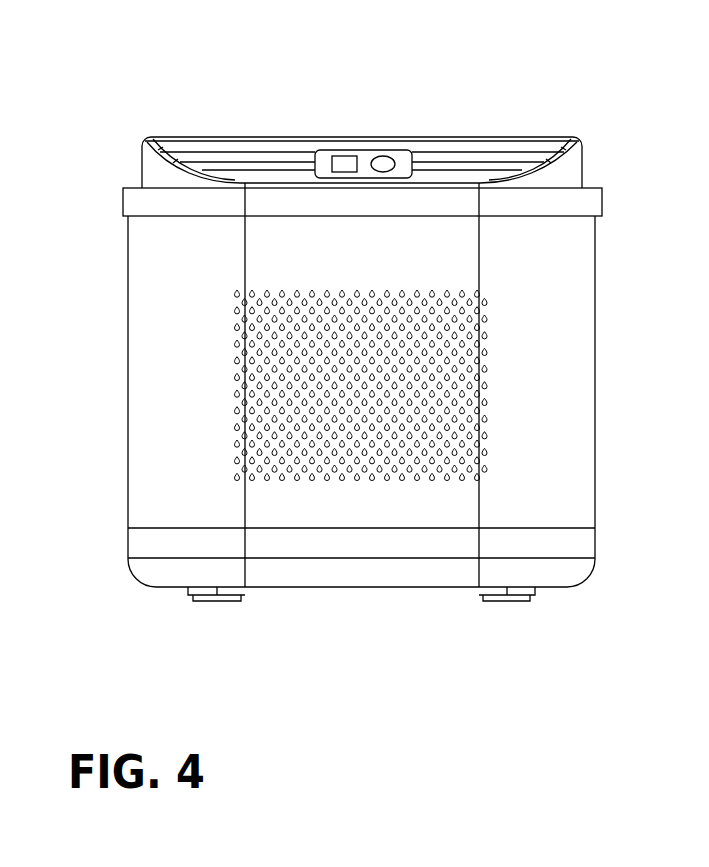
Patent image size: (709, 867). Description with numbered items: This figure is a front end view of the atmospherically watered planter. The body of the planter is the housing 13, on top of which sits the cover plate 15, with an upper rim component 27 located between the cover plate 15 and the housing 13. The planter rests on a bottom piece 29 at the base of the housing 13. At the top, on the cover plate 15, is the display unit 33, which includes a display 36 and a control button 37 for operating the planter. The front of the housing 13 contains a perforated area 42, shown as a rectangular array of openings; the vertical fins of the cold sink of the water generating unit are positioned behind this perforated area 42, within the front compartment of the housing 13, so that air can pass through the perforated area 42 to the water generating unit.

The housing 13 is at (599, 288).
The cover plate 15 is at (588, 148).
The upper rim component 27 is at (603, 195).
The bottom piece 29 is at (598, 544).
The display unit 33 is at (414, 153).
The display 36 is at (345, 157).
The control button 37 is at (385, 157).
The perforated area 42 is at (484, 367).